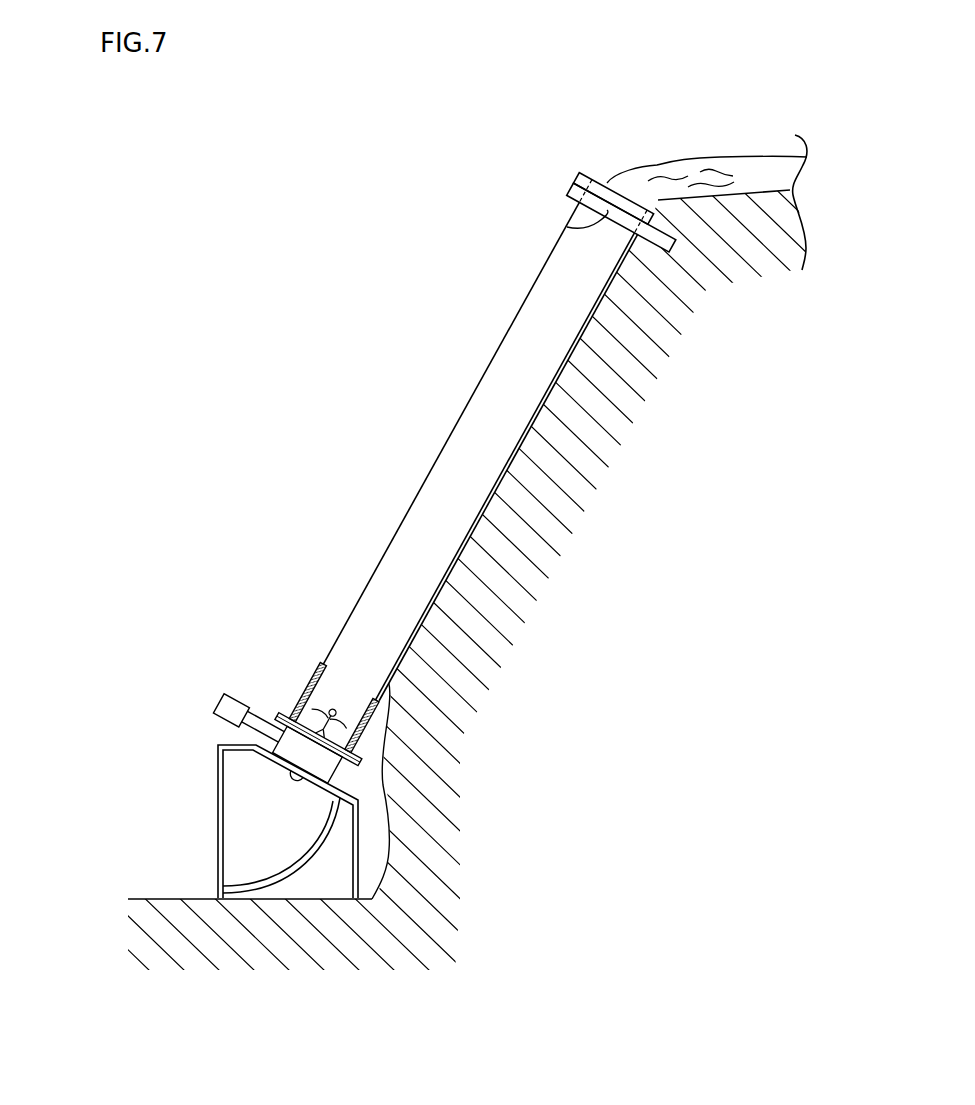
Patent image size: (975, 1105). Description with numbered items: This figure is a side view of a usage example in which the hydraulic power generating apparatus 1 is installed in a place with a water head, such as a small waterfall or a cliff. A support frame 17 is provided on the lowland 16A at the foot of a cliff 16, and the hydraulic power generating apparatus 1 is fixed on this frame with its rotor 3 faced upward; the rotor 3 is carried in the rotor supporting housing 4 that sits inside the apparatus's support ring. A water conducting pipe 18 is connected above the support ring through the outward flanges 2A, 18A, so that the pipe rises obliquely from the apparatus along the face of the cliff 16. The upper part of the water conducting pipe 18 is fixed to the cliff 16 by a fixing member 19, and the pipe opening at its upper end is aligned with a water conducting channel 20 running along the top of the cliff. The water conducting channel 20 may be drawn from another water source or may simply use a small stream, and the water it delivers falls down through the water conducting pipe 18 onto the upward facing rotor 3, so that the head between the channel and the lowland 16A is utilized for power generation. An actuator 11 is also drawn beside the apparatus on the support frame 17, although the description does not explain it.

The hydraulic power generating apparatus 1 is at (360, 778).
The outward flange 2A is at (277, 710).
The rotor 3 is at (343, 712).
The rotor supporting housing 4 is at (292, 782).
The cylinder 11 is at (215, 708).
The cliff 16 is at (733, 190).
The lowland 16A is at (153, 898).
The support frame 17 is at (218, 803).
The water conducting pipe 18 is at (512, 322).
The outward flange 18A is at (282, 708).
The fixing member 19 is at (566, 226).
The water conducting channel 20 is at (655, 163).